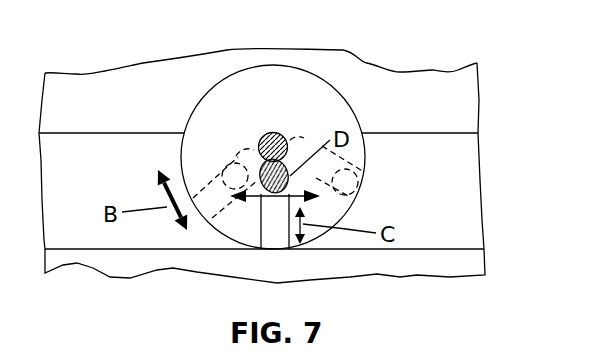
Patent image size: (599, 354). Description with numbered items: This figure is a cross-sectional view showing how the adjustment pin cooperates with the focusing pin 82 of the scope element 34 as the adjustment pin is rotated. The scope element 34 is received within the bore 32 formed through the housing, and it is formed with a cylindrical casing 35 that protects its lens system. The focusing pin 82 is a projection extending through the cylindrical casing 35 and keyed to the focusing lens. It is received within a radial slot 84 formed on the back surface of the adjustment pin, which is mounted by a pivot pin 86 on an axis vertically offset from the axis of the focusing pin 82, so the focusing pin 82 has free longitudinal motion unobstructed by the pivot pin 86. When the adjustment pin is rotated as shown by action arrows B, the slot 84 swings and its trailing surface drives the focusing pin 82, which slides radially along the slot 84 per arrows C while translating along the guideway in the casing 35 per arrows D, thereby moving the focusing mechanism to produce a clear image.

The bore 32 is at (97, 133).
The scope element 34 is at (92, 262).
The cylindrical casing 35 is at (413, 163).
The focusing pin 82 is at (260, 160).
The radial slot 84 is at (259, 221).
The pivot pin 86 is at (280, 133).